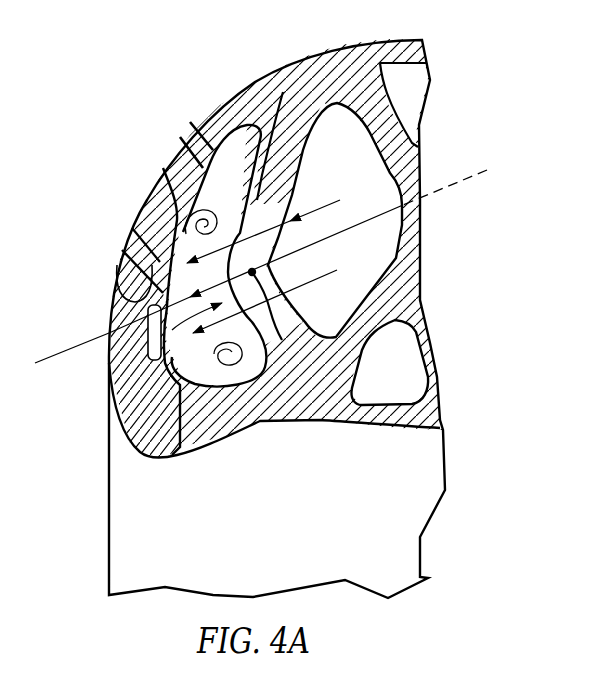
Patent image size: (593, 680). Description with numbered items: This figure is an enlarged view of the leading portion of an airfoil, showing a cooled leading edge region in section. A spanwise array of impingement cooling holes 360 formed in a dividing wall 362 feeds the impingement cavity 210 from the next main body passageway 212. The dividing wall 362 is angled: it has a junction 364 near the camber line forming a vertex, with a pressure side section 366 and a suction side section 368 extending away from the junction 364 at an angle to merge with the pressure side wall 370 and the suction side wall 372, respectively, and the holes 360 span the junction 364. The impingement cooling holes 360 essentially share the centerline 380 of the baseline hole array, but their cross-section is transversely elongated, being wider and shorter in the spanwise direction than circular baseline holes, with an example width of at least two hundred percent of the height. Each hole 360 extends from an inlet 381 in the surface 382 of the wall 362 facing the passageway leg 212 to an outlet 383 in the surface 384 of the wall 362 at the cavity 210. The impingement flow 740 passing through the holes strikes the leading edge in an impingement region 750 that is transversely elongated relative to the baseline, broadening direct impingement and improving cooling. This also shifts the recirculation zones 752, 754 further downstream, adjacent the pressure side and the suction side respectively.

The impingement cavity 210 is at (190, 363).
The main body passageway 212 is at (370, 197).
The impingement cooling holes 360 is at (283, 218).
The dividing wall 362 is at (300, 135).
The junction 364 is at (280, 322).
The pressure side section 366 is at (355, 352).
The suction side section 368 is at (243, 97).
The pressure side wall 370 is at (353, 407).
The suction side wall 372 is at (240, 86).
The centerline 380 is at (43, 350).
The inlets 381 is at (300, 231).
The surface of the wall in the passageway leg 382 is at (310, 187).
The outlets 383 is at (120, 385).
The surface of the wall at the cavity 384 is at (188, 125).
The impingement flow 740 is at (260, 421).
The impingement region 750 is at (117, 280).
The recirculation zone 752 is at (199, 385).
The recirculation zone 754 is at (186, 234).